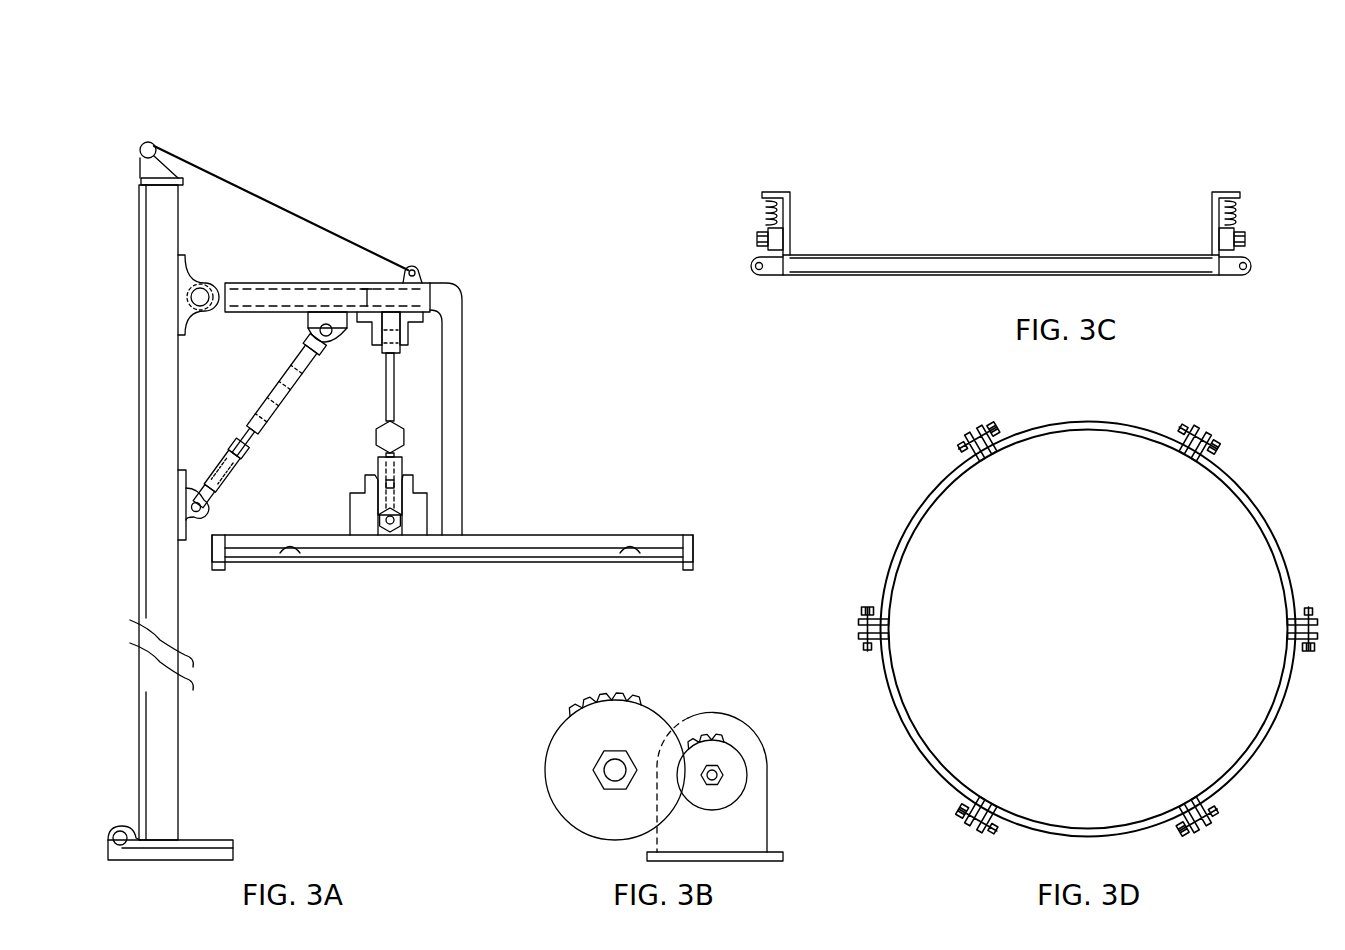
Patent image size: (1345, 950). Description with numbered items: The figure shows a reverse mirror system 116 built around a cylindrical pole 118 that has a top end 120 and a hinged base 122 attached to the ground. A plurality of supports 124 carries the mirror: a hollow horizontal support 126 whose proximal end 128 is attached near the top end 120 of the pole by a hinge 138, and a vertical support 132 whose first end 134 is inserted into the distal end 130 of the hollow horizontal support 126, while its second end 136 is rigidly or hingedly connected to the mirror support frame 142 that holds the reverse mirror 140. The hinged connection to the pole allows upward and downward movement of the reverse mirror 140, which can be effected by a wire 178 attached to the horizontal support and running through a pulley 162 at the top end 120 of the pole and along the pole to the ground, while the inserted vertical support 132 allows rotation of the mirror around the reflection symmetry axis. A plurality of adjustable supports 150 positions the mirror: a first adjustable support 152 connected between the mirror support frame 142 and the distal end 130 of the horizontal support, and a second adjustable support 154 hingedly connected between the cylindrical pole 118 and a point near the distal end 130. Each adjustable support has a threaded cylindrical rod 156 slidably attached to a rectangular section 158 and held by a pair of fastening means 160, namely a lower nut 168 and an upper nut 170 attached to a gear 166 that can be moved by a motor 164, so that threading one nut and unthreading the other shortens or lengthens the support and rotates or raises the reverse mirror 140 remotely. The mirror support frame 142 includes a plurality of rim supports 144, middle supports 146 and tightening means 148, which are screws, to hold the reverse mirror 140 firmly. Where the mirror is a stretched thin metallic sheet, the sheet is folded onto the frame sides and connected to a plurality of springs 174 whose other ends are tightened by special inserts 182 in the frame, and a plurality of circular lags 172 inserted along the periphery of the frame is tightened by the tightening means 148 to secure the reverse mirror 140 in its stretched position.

In FIG. 3A, the reverse mirror system 116 is at (328, 183).
In FIG. 3A, the cylindrical pole 118 is at (160, 453).
In FIG. 3A, the top end 120 is at (157, 218).
In FIG. 3A, the hinged base 122 is at (150, 850).
In FIG. 3A, the supports 124 is at (335, 280).
In FIG. 3A, the hollow horizontal support 126 is at (283, 283).
In FIG. 3A, the proximal end 128 is at (225, 283).
In FIG. 3A, the distal end 130 is at (438, 285).
In FIG. 3A, the vertical support 132 is at (452, 378).
In FIG. 3A, the first end 134 is at (452, 298).
In FIG. 3A, the second end 136 is at (440, 533).
In FIG. 3A, the hinge 138 is at (192, 290).
In FIG. 3A, the reverse mirror 140 is at (555, 565).
In FIG. 3C, the reverse mirror 140 is at (862, 275).
In FIG. 3A, the mirror support frame 142 is at (635, 535).
In FIG. 3C, the mirror support frame 142 is at (988, 190).
In FIG. 3C, the rim supports 144 is at (1238, 238).
In FIG. 3A, the middle supports 146 is at (290, 560).
In FIG. 3C, the tightening means 148 is at (1246, 242).
In FIG. 3D, the tightening means 148 is at (1222, 445).
In FIG. 3A, the adjustable supports 150 is at (240, 432).
In FIG. 3A, the first adjustable support 152 is at (400, 358).
In FIG. 3A, the second adjustable support 154 is at (297, 350).
In FIG. 3A, the threaded cylindrical rod 156 is at (268, 397).
In FIG. 3A, the rectangular section 158 is at (230, 477).
In FIG. 3A, the fastening means 160 is at (410, 520).
In FIG. 3A, the pulley 162 is at (142, 150).
In FIG. 3B, the motor 164 is at (750, 828).
In FIG. 3B, the gear 166 is at (645, 718).
In FIG. 3A, the lower nut 168 is at (383, 528).
In FIG. 3A, the upper nut 170 is at (380, 450).
In FIG. 3D, the circular lags 172 is at (1250, 758).
In FIG. 3C, the springs 174 is at (768, 212).
In FIG. 3A, the wire 178 is at (415, 266).
In FIG. 3C, the special inserts 182 is at (775, 192).